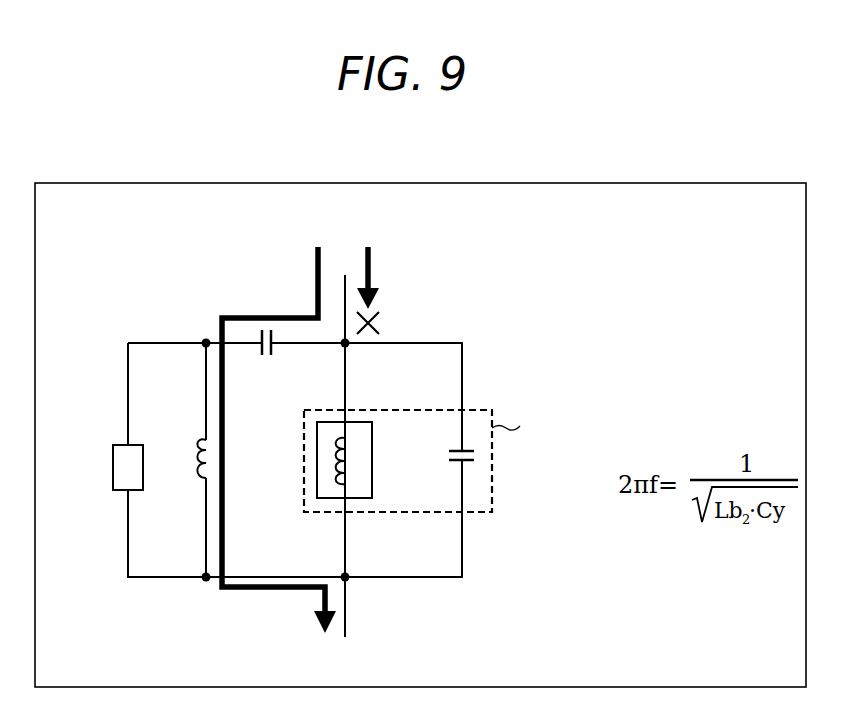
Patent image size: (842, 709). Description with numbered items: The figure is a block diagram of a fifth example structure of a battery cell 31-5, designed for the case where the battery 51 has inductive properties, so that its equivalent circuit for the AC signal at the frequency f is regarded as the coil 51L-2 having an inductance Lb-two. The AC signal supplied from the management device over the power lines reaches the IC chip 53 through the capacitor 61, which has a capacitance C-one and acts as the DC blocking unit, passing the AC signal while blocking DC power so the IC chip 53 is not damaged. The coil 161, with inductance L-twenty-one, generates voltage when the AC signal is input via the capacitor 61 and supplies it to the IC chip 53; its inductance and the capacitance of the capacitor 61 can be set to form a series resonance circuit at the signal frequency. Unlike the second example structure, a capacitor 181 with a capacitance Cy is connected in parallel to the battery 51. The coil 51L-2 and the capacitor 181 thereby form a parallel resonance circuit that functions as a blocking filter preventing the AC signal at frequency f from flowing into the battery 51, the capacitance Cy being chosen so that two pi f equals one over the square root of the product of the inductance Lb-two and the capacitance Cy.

The battery cell 31-5 is at (174, 621).
The IC chip 53 is at (113, 467).
The coil 161 is at (199, 443).
The capacitor 61 is at (266, 358).
The battery 51 is at (327, 422).
The coil 51L-2 is at (328, 460).
The capacitor 181 is at (449, 458).